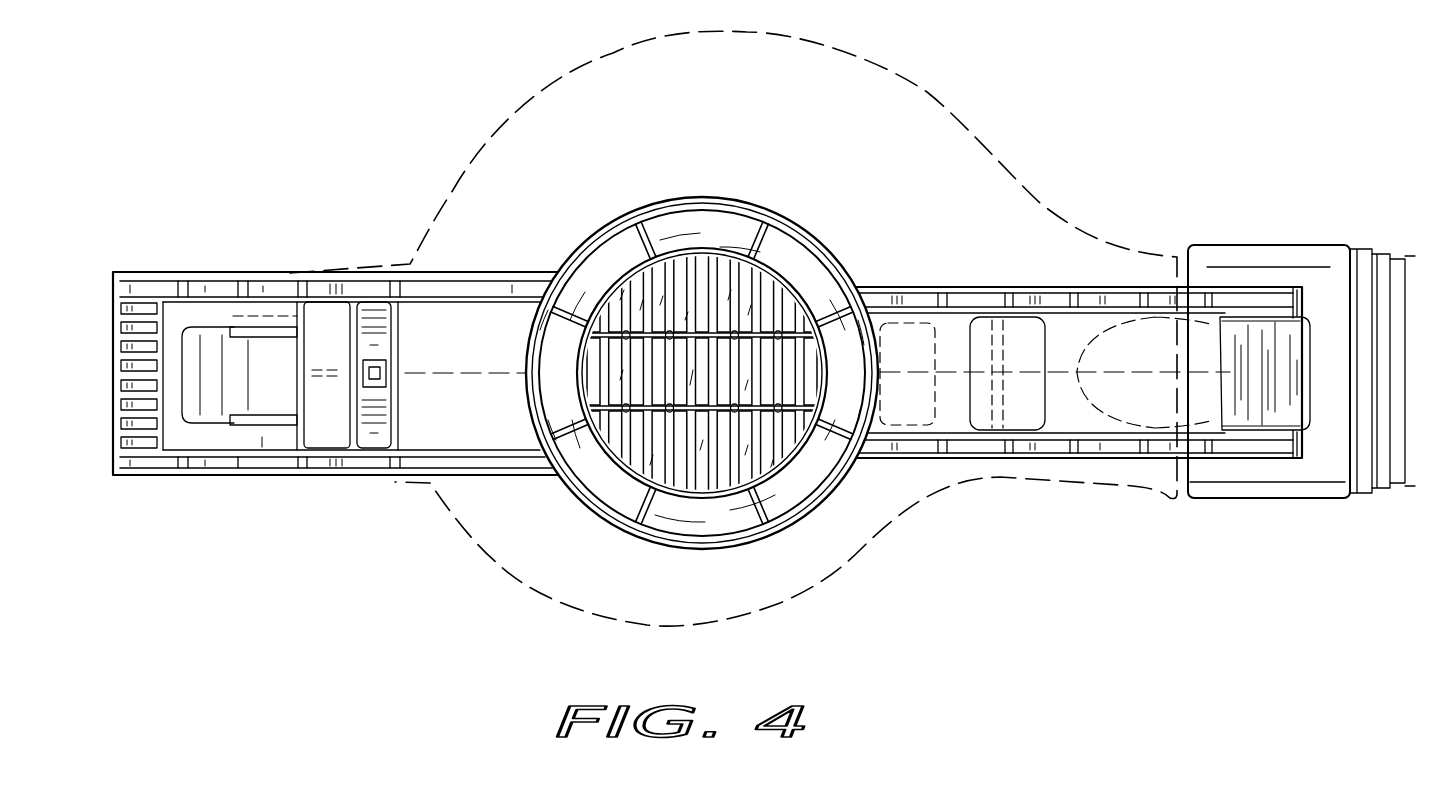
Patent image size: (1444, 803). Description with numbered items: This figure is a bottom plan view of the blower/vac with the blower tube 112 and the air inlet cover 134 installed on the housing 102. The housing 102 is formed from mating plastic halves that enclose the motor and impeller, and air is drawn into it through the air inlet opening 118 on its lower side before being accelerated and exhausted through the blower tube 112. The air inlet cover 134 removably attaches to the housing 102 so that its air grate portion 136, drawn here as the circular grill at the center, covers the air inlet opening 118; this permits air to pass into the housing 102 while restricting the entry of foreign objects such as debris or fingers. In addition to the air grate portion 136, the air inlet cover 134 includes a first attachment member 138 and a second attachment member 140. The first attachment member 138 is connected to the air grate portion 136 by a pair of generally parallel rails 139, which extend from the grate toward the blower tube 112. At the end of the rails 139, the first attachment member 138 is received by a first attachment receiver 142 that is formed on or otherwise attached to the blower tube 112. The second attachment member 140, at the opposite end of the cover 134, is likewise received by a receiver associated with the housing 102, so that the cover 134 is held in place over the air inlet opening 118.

The housing 102 is at (912, 83).
The blower tube 112 is at (1285, 246).
The air inlet opening 118 is at (709, 381).
The air inlet cover 134 is at (285, 256).
The air grate portion 136 is at (685, 277).
The first attachment member 138 is at (1302, 315).
The rails 139 is at (1054, 292).
The second attachment member 140 is at (232, 419).
The first attachment receiver 142 is at (1322, 442).